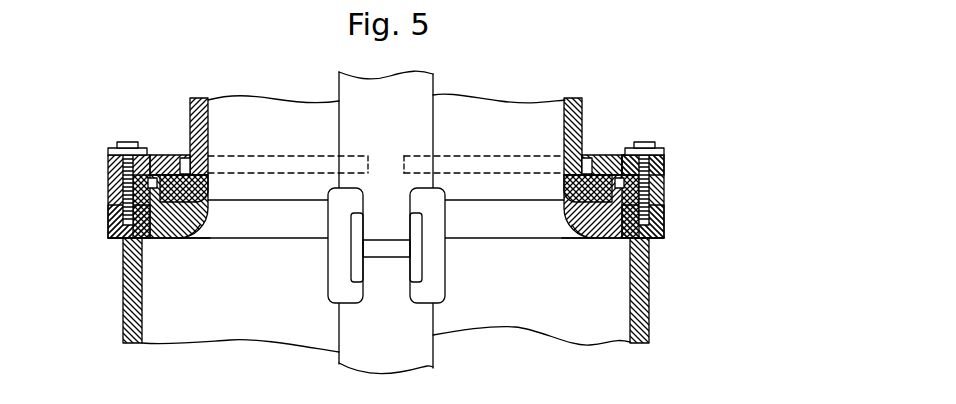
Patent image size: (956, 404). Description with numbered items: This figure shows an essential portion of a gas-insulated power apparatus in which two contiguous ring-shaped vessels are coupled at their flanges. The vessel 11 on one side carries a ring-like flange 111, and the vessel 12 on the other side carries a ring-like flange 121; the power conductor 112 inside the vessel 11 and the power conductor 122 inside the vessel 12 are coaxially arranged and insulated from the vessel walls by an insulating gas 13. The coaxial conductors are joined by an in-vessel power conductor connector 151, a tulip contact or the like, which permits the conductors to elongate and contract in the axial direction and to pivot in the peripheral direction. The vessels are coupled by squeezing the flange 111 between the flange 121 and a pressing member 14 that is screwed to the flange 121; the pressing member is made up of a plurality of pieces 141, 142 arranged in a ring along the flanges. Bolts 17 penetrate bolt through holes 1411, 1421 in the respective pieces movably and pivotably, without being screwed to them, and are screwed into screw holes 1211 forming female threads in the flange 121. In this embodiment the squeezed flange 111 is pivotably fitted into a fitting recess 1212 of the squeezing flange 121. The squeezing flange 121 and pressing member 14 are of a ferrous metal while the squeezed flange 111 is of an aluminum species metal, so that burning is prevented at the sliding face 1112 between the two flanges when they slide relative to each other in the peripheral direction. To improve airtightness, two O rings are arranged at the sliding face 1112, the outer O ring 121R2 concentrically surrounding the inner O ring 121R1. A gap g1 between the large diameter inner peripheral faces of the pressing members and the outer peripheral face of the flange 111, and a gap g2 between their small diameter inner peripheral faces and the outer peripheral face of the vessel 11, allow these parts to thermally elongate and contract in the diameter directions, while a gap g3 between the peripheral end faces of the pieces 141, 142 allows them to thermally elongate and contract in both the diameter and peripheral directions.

The vessel 11 is at (583, 98).
The vessel 12 is at (652, 290).
The insulating gas 13 is at (510, 315).
The pressing member 14 is at (665, 185).
The bolt 17 is at (122, 143).
The flange 111 is at (208, 180).
The power conductor 112 is at (418, 90).
The flange 121 is at (150, 240).
The power conductor 122 is at (433, 327).
The pressing member piece 141 is at (312, 152).
The pressing member piece 142 is at (450, 152).
The in-vessel power conductor connector 151 is at (327, 293).
The sliding face 1112 is at (210, 200).
The screw hole 1211 is at (108, 203).
The fitting recess 1212 is at (172, 155).
The bolt through hole 1411 is at (108, 168).
The bolt through hole 1421 is at (665, 160).
The O ring 121R1 is at (210, 238).
The O ring 121R2 is at (188, 236).
The gap g1 is at (160, 238).
The gap g2 is at (208, 158).
The gap g3 is at (387, 165).